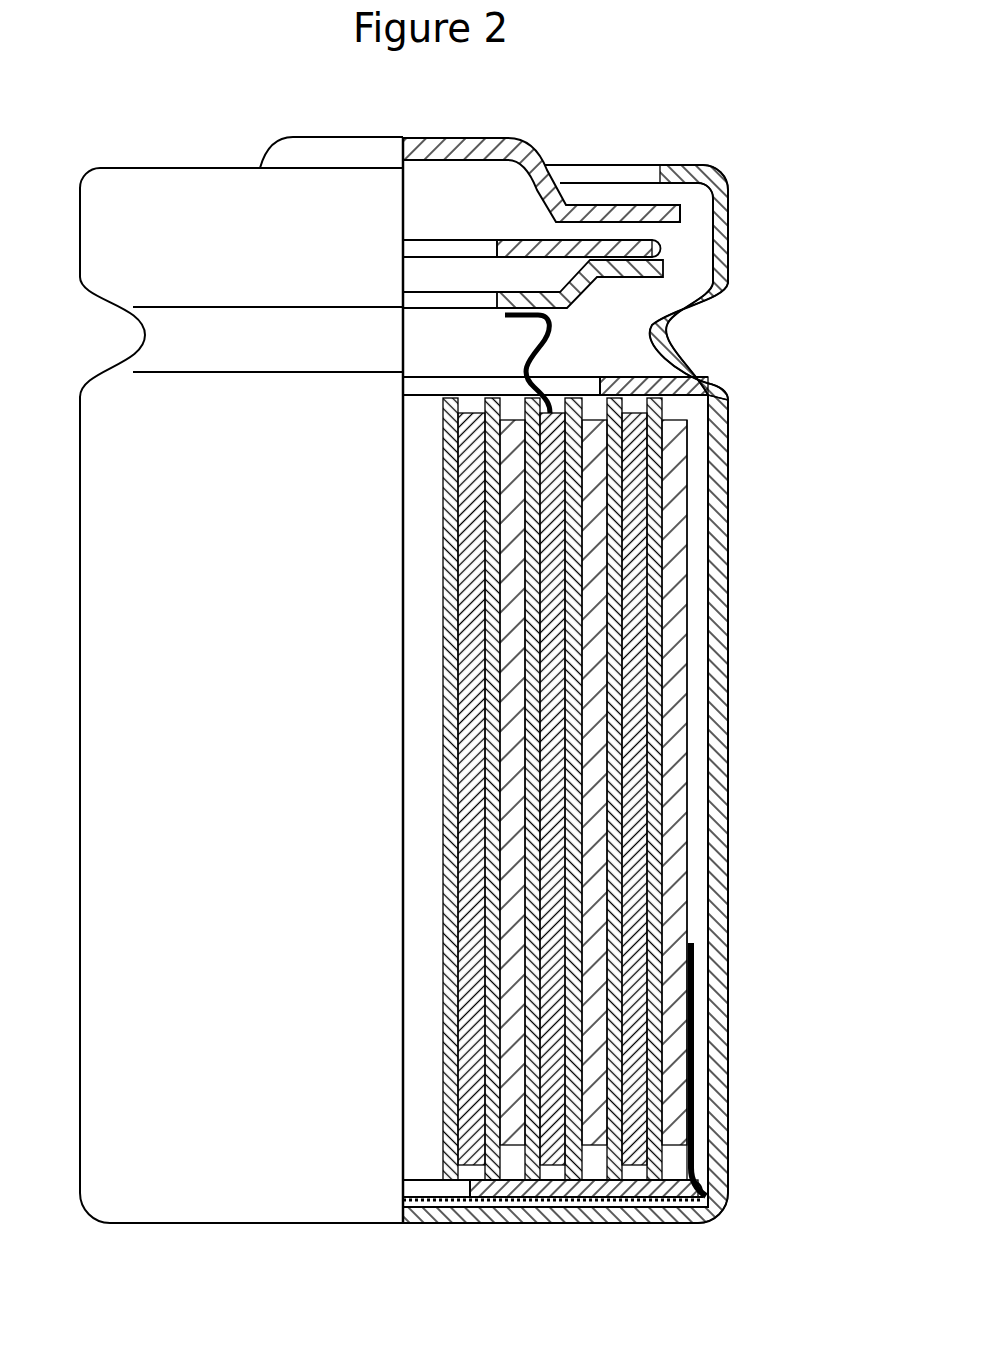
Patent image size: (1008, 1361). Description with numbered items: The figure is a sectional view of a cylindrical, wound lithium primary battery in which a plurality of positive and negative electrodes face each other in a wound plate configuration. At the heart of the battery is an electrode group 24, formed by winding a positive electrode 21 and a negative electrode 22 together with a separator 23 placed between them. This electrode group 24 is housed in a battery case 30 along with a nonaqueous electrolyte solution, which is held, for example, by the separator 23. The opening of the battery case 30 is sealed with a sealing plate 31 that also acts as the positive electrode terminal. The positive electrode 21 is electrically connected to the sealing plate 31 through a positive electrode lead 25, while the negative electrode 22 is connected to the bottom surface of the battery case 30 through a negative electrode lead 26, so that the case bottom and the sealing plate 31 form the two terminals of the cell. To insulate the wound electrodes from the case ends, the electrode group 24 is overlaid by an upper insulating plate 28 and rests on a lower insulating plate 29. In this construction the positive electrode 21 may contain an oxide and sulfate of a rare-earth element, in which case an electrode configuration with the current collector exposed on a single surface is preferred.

The positive electrode 21 is at (633, 625).
The negative electrode 22 is at (625, 568).
The separator 23 is at (800, 645).
The electrode group 24 is at (645, 789).
The positive electrode lead 25 is at (554, 328).
The negative electrode lead 26 is at (697, 1073).
The upper insulating plate 28 is at (705, 377).
The lower insulating plate 29 is at (644, 1227).
The battery case 30 is at (722, 872).
The sealing plate 31 is at (580, 212).